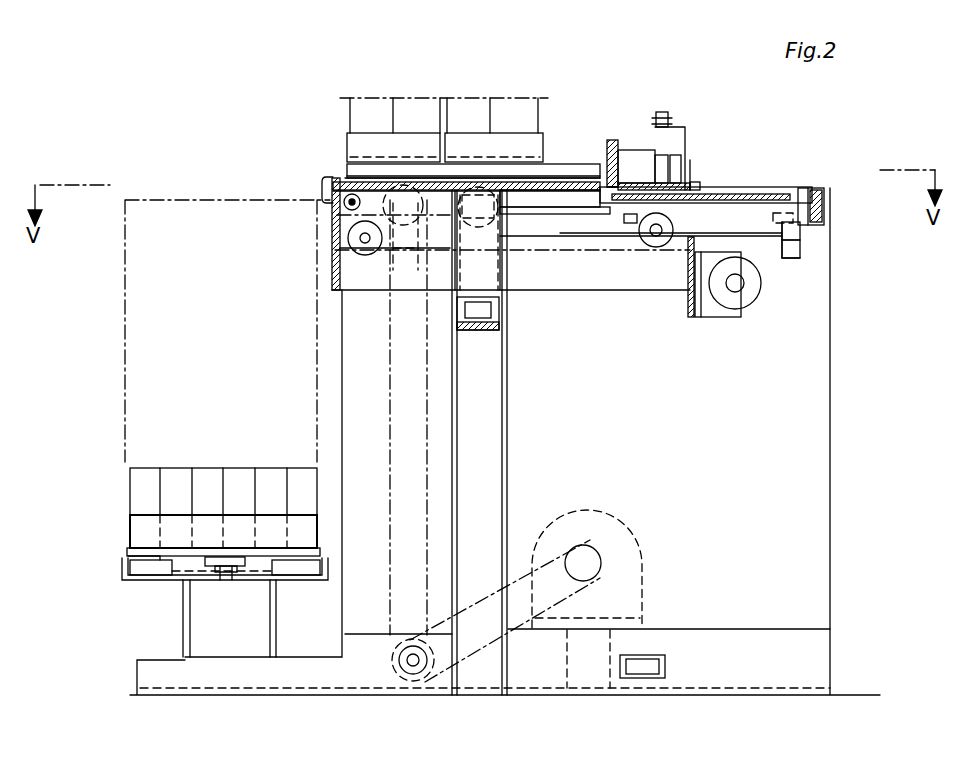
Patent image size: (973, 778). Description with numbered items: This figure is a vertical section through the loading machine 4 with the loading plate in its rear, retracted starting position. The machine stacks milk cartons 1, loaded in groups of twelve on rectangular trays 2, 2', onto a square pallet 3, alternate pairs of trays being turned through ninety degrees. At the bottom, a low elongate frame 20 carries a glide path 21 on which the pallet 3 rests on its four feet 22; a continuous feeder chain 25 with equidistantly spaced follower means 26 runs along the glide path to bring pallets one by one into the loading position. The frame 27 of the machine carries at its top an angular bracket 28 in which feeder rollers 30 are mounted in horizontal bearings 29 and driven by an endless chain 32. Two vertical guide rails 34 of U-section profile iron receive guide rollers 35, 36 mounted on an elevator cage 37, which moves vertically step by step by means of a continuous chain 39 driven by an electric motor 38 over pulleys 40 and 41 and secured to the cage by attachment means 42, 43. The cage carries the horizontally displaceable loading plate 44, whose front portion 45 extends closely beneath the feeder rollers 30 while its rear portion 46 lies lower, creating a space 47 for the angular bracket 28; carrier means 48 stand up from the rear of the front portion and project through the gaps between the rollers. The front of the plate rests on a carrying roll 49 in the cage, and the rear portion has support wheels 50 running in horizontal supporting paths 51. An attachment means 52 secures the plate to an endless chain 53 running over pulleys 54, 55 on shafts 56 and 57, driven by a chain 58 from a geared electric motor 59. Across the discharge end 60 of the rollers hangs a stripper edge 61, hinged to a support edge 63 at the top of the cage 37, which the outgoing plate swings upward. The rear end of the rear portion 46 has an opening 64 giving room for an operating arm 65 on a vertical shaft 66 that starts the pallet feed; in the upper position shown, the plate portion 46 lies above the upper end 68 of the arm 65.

The milk cartons 1 is at (180, 480).
The tray 2 is at (197, 522).
The upper container 2' is at (436, 110).
The pallet 3 is at (130, 553).
The loading machine 4 is at (834, 430).
The frame 20 is at (181, 605).
The glide path 21 is at (162, 582).
The feet 22 is at (133, 572).
The feeder chain 25 is at (225, 580).
The follower means 26 is at (237, 568).
The frame 27 is at (815, 190).
The angular bracket 28 is at (683, 172).
The horizontal bearings 29 is at (640, 163).
The feeder rollers 30 is at (565, 160).
The endless chain 32 is at (668, 120).
The vertical guide rails 34 is at (505, 490).
The guide roller 35 is at (496, 312).
The guide roller 36 is at (472, 195).
The elevator cage 37 is at (328, 292).
The electric motor 38 is at (622, 545).
The continuous chain 39 is at (425, 408).
The pulley 40 is at (380, 268).
The pulley 41 is at (400, 658).
The attachment means 42 is at (400, 290).
The attachment means 43 is at (478, 240).
The loading plate 44 is at (530, 195).
The front portion 45 is at (510, 183).
The rear portion 46 is at (615, 214).
The space 47 is at (618, 197).
The carrier means 48 is at (605, 150).
The carrying roll 49 is at (346, 206).
The support wheels 50 is at (800, 216).
The supporting paths 51 is at (735, 236).
The attachment means 52 is at (628, 224).
The endless chain 53 is at (585, 253).
The pulley 54 is at (688, 270).
The pulley 55 is at (356, 246).
The shaft 56 is at (655, 248).
The shaft 57 is at (360, 234).
The chain 58 is at (713, 285).
The electric motor 59 is at (733, 306).
The discharge end 60 is at (345, 175).
The stripper edge 61 is at (326, 195).
The support edge 63 is at (335, 187).
The opening 64 is at (777, 197).
The operating arm 65 is at (786, 252).
The vertical shaft 66 is at (798, 246).
The upper end 68 is at (800, 233).